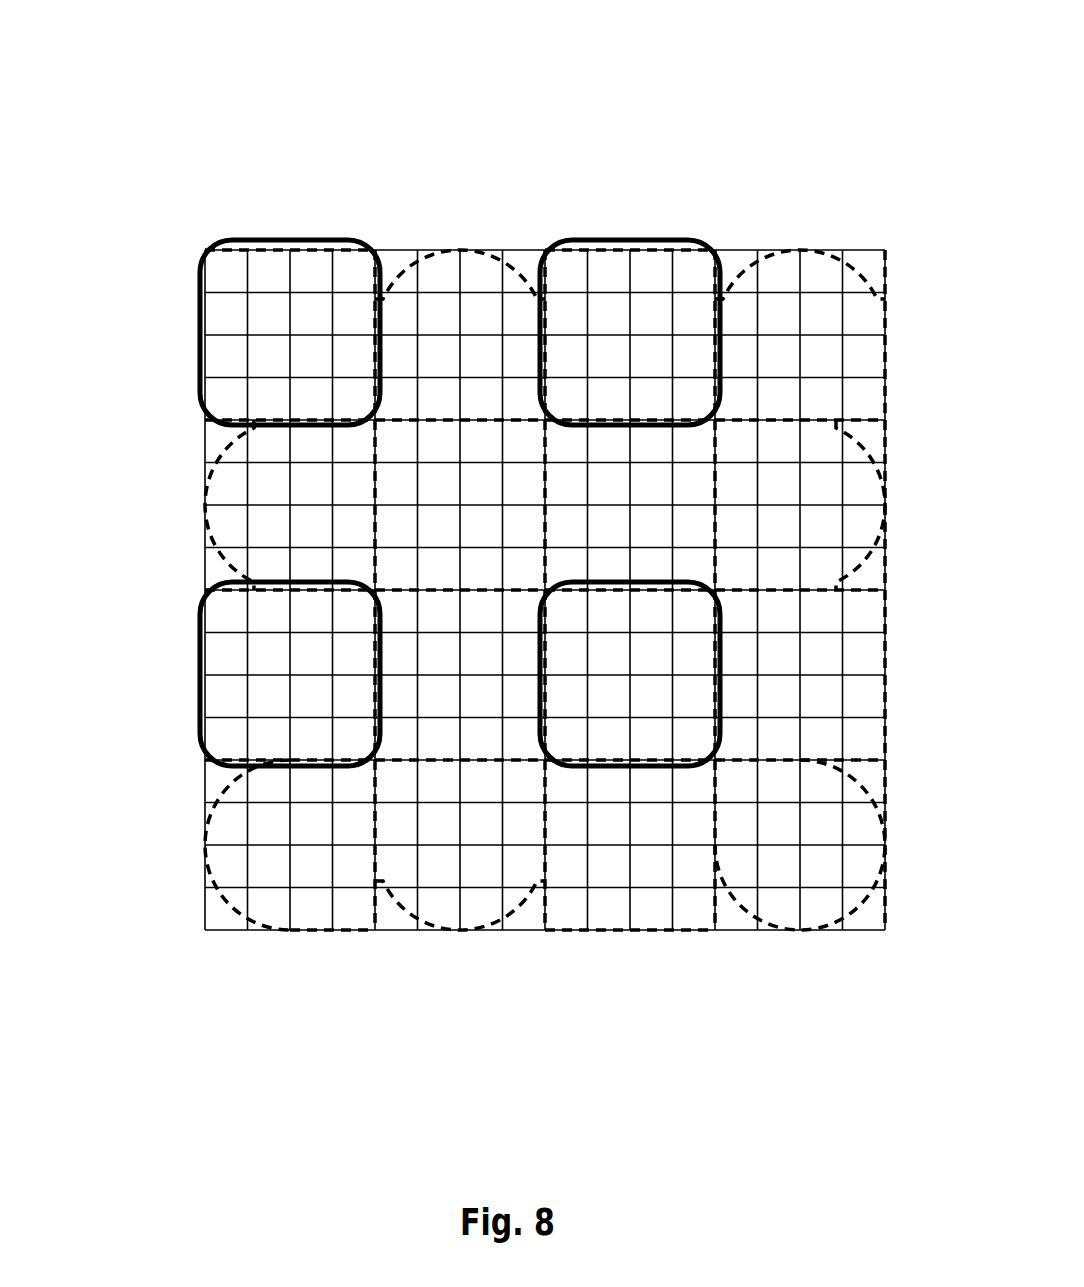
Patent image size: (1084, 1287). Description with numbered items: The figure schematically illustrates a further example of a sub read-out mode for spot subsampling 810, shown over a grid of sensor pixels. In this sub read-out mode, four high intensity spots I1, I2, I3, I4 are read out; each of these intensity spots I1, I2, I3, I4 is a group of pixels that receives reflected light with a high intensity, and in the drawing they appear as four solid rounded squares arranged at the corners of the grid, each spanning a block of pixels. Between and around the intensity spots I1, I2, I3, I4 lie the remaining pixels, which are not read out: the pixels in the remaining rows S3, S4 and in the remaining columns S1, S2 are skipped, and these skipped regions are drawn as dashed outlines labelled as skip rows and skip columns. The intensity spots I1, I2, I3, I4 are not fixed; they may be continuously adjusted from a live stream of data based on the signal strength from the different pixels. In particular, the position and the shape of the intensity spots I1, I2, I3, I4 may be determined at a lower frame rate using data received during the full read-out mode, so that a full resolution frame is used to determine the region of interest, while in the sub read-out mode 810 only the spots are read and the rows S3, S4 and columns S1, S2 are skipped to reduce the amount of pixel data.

The sub read-out mode for spot subsampling 810 is at (503, 516).
The intensity spot I1 is at (281, 240).
The intensity spot I2 is at (633, 240).
The intensity spot I3 is at (200, 620).
The intensity spot I4 is at (723, 663).
The skipped column S1 is at (484, 250).
The skipped column S2 is at (828, 250).
The skipped row S3 is at (887, 490).
The skipped row S4 is at (884, 820).